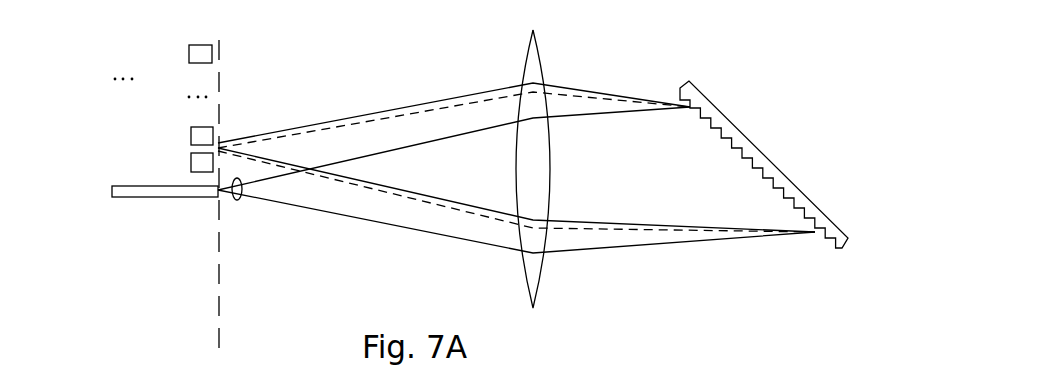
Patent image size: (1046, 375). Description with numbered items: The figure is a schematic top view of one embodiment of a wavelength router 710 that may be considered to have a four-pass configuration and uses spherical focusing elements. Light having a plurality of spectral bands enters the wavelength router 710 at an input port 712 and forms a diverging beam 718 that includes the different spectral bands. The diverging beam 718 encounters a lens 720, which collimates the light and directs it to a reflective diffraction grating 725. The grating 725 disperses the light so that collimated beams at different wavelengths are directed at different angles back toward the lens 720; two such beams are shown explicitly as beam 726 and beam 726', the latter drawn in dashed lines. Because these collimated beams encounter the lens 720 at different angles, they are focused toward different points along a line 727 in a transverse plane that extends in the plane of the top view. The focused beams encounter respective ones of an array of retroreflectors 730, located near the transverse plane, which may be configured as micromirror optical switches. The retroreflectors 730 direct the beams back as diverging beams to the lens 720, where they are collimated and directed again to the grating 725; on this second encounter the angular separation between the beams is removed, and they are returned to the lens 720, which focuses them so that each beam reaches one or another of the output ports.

The wavelength router 710 is at (813, 135).
The input port 712 is at (143, 190).
The diverging beam 718 is at (238, 200).
The lens 720 is at (545, 287).
The reflective diffraction grating 725 is at (803, 195).
The collimated beam 726 is at (516, 162).
The collimated beam 726' is at (516, 145).
The line 727 is at (219, 312).
The retroreflectors 730 is at (188, 52).